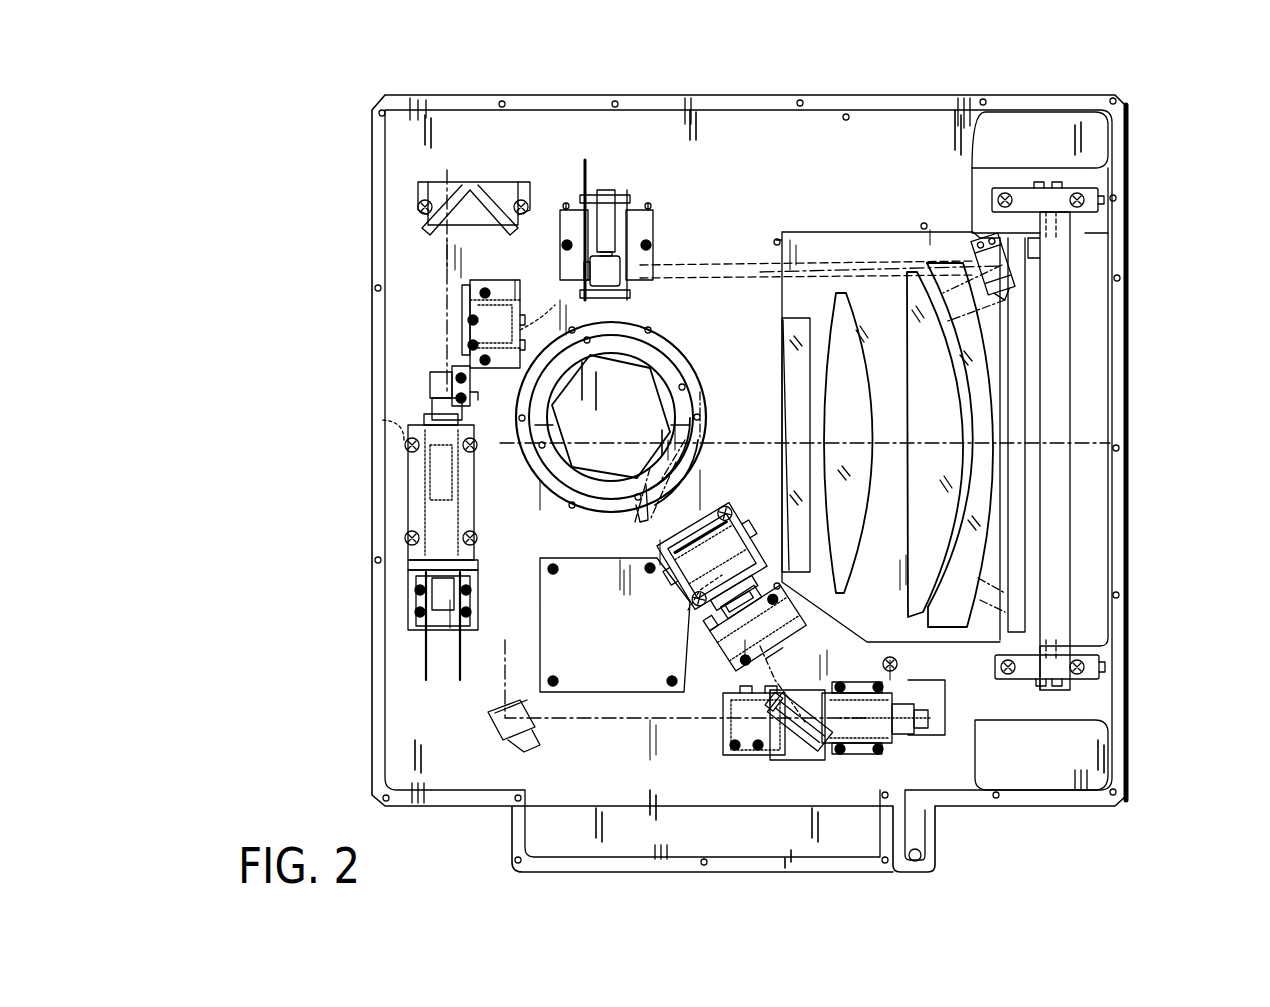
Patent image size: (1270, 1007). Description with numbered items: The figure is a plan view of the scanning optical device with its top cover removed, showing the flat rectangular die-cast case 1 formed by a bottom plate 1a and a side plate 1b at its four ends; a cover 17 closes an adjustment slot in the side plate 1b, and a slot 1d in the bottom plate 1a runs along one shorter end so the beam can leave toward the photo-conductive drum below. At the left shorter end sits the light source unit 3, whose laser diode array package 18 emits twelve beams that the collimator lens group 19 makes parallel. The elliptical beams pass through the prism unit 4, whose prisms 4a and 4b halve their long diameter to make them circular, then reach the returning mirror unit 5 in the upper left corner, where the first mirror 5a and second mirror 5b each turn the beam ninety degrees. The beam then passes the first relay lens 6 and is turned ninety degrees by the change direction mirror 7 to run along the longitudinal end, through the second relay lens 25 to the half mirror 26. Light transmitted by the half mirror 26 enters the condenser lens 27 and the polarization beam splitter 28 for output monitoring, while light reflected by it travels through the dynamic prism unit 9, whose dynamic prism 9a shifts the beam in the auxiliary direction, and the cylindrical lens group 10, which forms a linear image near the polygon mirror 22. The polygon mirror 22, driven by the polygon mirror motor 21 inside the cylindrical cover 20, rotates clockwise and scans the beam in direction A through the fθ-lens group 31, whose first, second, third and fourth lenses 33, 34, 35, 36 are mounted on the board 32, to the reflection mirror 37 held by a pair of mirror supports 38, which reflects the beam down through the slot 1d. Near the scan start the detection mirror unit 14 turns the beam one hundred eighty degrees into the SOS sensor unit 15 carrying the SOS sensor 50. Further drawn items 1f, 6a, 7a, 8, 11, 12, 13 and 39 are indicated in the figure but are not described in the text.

The case 1 is at (777, 100).
The bottom plate 1a is at (397, 660).
The side plate 1b is at (384, 560).
The slot 1d is at (1002, 522).
The positioning pin 1f is at (565, 200).
The light source unit 3 is at (478, 511).
The prism unit 4 is at (312, 352).
The prism 4a is at (432, 408).
The prism 4b is at (432, 378).
The returning mirror unit 5 is at (490, 182).
The first mirror 5a is at (445, 192).
The second mirror 5b is at (512, 192).
The first relay lens 6 is at (478, 285).
The polarization plate 6a is at (550, 310).
The change direction mirror 7 is at (530, 750).
The mirror holder 7a is at (487, 718).
The relay optical unit 8 is at (832, 737).
The dynamic prism unit 9 is at (802, 642).
The dynamic prism 9a is at (728, 682).
The cylindrical lens group 10 is at (748, 507).
The prism unit 11 is at (688, 354).
The projection lens unit 12 is at (868, 215).
The lens barrel 13 is at (1040, 548).
The detection mirror unit 14 is at (1012, 262).
The SOS sensor unit 15 is at (655, 222).
The cover 17 is at (1128, 425).
The laser diode array package 18 is at (468, 625).
The collimator lens group 19 is at (371, 467).
The cylindrical cover 20 is at (700, 384).
The polygon mirror motor 21 is at (646, 340).
The polygon mirror 22 is at (648, 514).
The second relay lens 25 is at (745, 757).
The half mirror 26 is at (808, 750).
The condenser lens 27 is at (835, 694).
The polarization beam splitter 28 is at (920, 697).
The fθ-lens group 31 is at (882, 258).
The board 32 is at (795, 238).
The first lens 33 is at (786, 400).
The second lens 34 is at (848, 362).
The third lens 35 is at (915, 488).
The fourth lens 36 is at (940, 592).
The reflection mirror 37 is at (1045, 365).
The mirror supports 38 is at (1028, 188).
The fixing screw 39 is at (560, 246).
The SOS sensor 50 is at (588, 272).